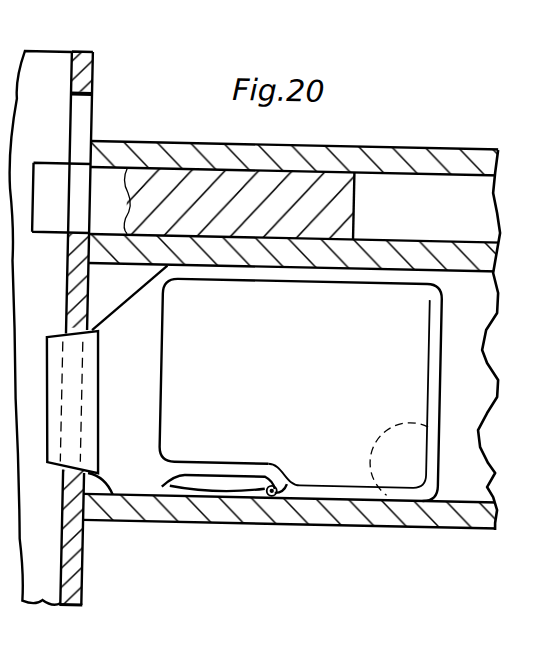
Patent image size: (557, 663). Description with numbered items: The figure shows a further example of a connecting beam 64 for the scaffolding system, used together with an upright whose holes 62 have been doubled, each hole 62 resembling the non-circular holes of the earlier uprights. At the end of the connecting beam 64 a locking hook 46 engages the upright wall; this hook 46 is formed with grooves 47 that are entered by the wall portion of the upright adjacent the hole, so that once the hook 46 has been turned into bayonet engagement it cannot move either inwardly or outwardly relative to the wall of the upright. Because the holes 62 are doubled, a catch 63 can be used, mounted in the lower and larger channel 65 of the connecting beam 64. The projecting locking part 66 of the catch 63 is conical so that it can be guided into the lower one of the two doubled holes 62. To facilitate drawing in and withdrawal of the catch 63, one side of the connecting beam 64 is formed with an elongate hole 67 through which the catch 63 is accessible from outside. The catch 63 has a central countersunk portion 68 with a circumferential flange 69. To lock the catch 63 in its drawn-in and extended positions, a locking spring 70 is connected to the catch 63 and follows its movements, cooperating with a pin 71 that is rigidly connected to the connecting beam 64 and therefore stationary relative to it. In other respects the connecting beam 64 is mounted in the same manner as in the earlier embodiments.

The locking hook 46 is at (49, 223).
The groove 47 is at (69, 193).
The hole 62 is at (91, 116).
The catch 63 is at (136, 469).
The connecting beam 64 is at (412, 151).
The channel 65 is at (466, 344).
The projecting locking part 66 is at (57, 358).
The elongate hole 67 is at (484, 422).
The central countersunk portion 68 is at (401, 324).
The circumferential flange 69 is at (435, 293).
The locking spring 70 is at (229, 487).
The pin 71 is at (305, 468).